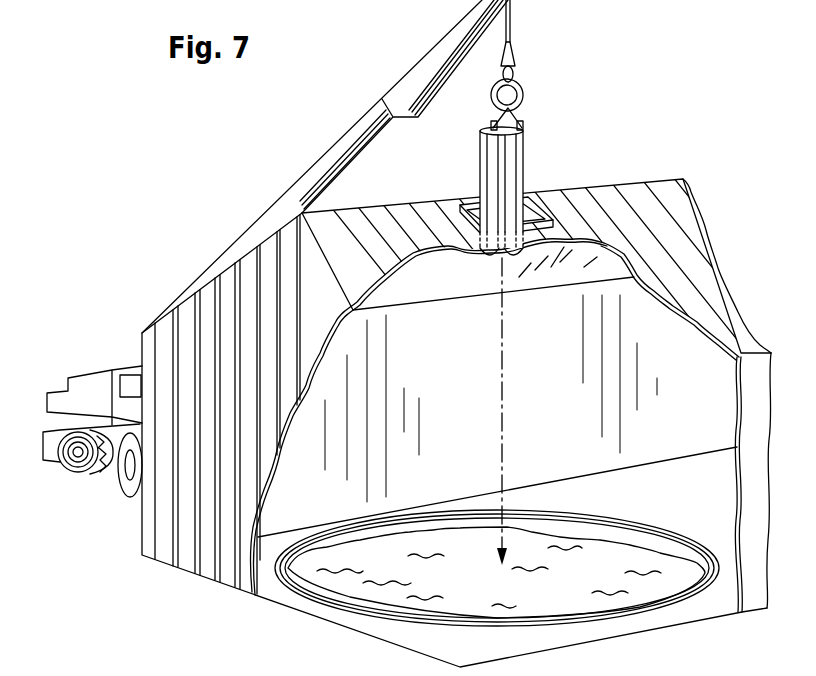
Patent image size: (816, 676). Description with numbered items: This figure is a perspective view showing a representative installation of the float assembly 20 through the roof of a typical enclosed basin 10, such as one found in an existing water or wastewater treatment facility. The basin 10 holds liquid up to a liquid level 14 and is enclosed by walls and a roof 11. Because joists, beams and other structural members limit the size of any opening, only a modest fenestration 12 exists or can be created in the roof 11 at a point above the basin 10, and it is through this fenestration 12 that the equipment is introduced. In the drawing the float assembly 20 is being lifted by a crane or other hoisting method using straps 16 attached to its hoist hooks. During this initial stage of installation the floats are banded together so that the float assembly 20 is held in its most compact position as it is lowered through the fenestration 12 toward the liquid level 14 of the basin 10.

The basin 10 is at (650, 514).
The roof 11 is at (622, 188).
The fenestration 12 is at (540, 197).
The liquid level 14 is at (660, 587).
The straps 16 is at (522, 116).
The float assembly 20 is at (540, 142).